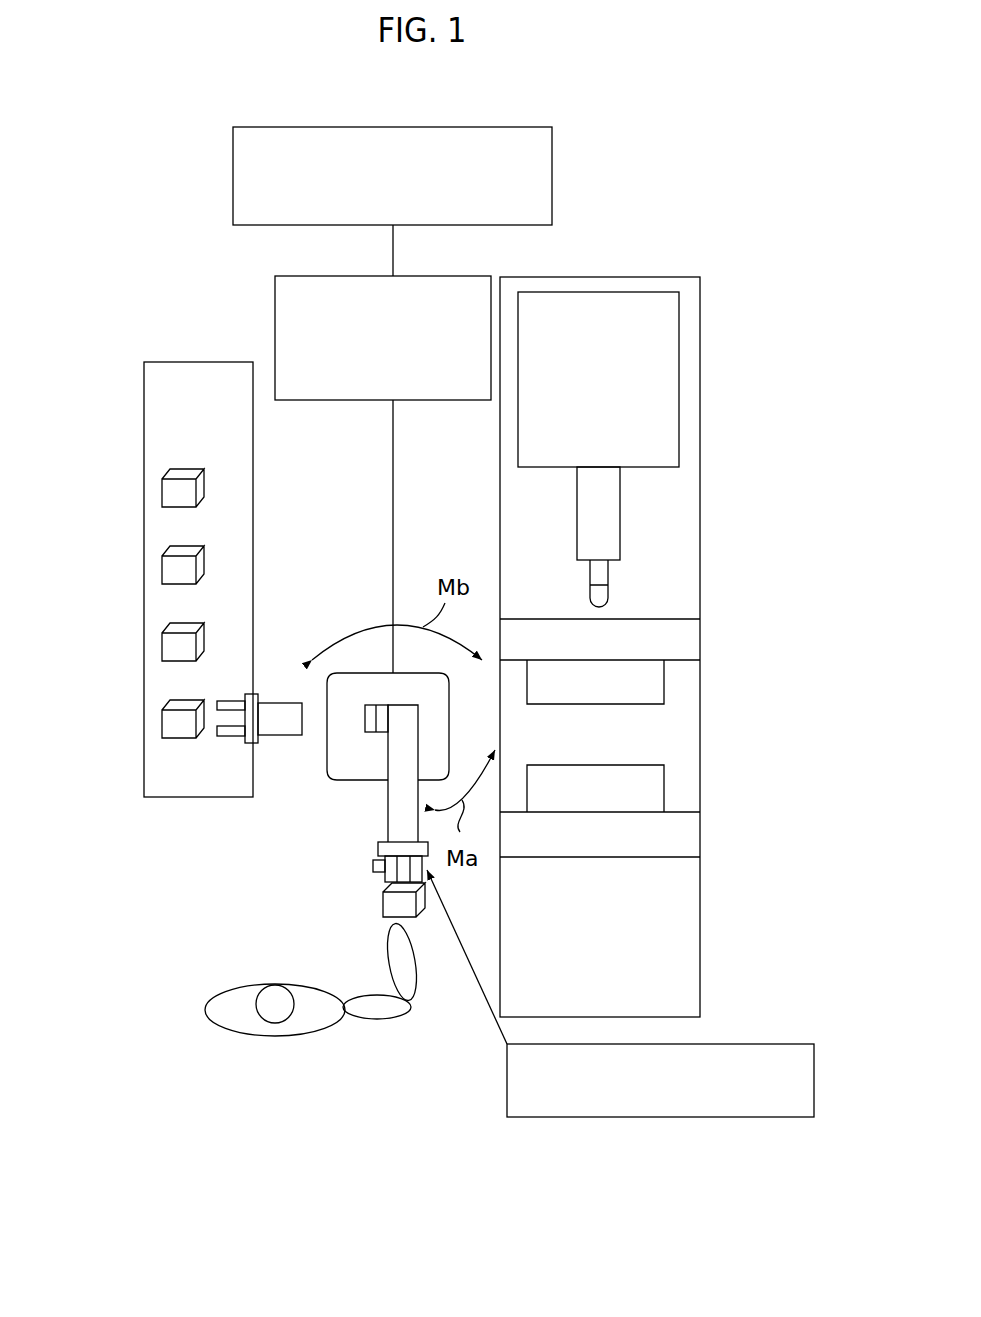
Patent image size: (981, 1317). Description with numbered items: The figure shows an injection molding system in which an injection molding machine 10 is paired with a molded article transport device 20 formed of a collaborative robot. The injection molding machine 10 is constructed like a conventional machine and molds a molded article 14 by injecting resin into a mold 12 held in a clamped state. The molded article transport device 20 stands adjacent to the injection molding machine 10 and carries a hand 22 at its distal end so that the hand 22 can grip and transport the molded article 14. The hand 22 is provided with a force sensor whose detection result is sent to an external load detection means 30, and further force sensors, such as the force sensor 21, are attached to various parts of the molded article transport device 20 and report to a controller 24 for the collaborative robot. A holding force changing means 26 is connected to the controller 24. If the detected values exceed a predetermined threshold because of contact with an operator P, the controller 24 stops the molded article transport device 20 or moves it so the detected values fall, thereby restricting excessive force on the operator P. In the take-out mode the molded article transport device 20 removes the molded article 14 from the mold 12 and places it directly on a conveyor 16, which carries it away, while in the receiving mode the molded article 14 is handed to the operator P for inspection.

The injection molding machine 10 is at (667, 373).
The mold 12 is at (637, 785).
The molded article 14 is at (180, 648).
The conveyor 16 is at (180, 770).
The molded article transport device 20 is at (327, 778).
The force sensor 21 is at (373, 866).
The hand 22 is at (385, 878).
The controller for the collaborative robot 24 is at (275, 303).
The holding force changing means 26 is at (552, 175).
The external load detection means 30 is at (618, 1117).
The operator P is at (205, 1015).